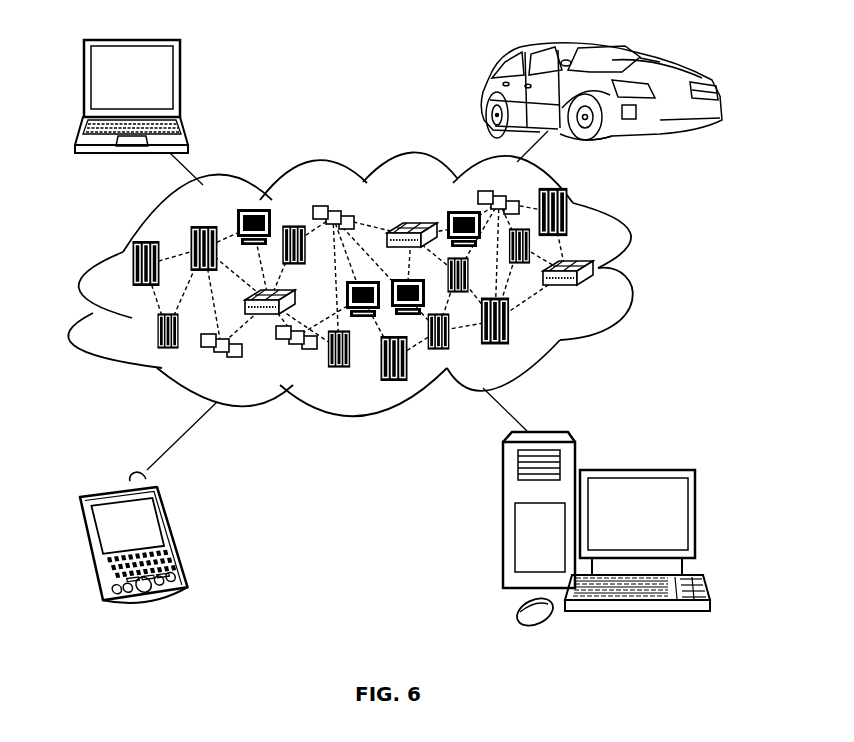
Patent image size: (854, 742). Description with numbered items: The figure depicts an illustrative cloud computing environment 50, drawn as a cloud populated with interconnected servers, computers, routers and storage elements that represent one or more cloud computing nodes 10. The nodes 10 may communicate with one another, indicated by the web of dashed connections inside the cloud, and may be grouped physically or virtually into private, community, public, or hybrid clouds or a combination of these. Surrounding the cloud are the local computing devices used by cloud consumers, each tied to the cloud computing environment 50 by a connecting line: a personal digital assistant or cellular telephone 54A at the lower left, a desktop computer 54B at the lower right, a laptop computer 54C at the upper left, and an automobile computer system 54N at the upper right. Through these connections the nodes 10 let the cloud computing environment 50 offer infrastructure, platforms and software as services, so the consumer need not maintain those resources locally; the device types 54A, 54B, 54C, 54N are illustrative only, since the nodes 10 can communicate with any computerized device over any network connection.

The cloud computing node 10 is at (600, 294).
The cloud computing environment 50 is at (372, 300).
The personal digital assistant or cellular telephone 54A is at (172, 537).
The desktop computer 54B is at (638, 468).
The laptop computer 54C is at (180, 83).
The automobile computer system 54N is at (481, 92).